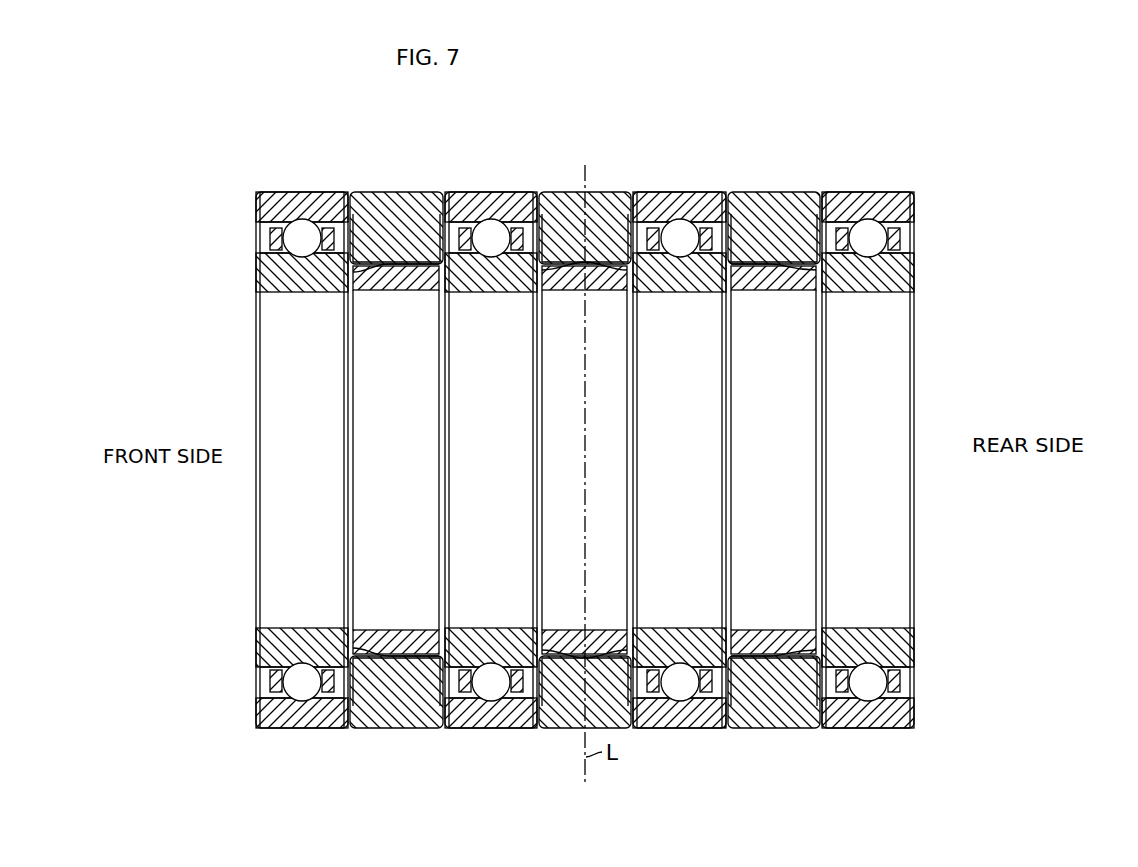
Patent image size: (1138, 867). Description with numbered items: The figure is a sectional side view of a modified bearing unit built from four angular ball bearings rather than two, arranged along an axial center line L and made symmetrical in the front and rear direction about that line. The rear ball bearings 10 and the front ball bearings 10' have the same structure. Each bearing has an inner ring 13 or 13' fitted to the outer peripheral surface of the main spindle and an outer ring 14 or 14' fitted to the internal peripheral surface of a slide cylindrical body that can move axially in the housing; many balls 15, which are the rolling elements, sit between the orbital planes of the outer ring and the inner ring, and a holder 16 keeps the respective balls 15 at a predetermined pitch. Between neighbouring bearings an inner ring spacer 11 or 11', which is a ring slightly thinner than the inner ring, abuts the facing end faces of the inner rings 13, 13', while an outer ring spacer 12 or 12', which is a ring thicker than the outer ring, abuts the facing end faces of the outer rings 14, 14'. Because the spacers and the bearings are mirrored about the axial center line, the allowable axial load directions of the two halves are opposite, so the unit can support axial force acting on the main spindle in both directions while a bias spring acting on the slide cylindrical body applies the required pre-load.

The rear ball bearing 10 is at (808, 420).
The front ball bearing 10' is at (381, 428).
The inner ring spacer 11 is at (773, 460).
The inner ring spacer 11' is at (396, 460).
The outer ring spacer 12 is at (774, 428).
The outer ring spacer 12' is at (396, 428).
The inner ring 13 is at (773, 460).
The inner ring 13' is at (396, 460).
The outer ring 14 is at (773, 428).
The outer ring 14' is at (396, 428).
The balls 15 is at (298, 230).
The holder 16 is at (270, 244).